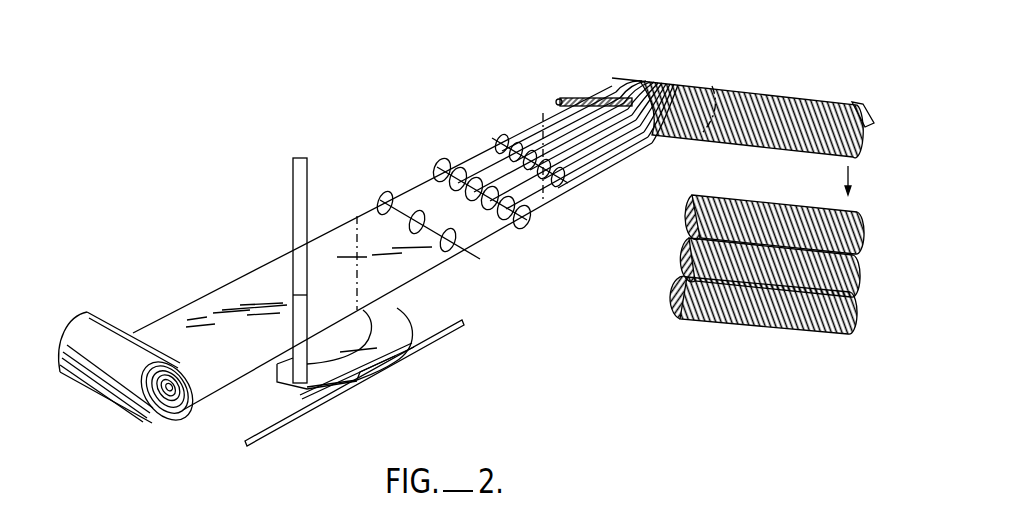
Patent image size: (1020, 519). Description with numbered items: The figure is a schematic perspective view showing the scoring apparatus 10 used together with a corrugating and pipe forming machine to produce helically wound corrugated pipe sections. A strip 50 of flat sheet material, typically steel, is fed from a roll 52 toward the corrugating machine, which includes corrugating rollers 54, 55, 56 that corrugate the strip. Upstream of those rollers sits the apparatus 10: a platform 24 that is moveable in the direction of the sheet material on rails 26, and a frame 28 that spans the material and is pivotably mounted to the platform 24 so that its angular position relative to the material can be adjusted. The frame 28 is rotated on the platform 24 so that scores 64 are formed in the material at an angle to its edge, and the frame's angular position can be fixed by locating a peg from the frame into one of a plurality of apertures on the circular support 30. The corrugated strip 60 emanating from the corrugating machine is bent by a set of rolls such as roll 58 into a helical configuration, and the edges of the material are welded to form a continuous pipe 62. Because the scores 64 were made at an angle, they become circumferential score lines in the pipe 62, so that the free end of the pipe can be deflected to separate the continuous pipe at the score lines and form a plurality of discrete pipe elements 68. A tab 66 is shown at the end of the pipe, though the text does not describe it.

The apparatus 10 is at (280, 155).
The platform 24 is at (337, 387).
The rails 26 is at (277, 430).
The frame 28 is at (292, 193).
The circular support 30 is at (400, 313).
The strip 50 is at (213, 380).
The roll 52 is at (83, 337).
The corrugating roller 54 is at (380, 197).
The corrugating roller 55 is at (434, 163).
The corrugating roller 56 is at (493, 133).
The bending roll 58 is at (568, 98).
The corrugated strip 60 is at (590, 138).
The continuous pipe 62 is at (656, 82).
The scores 64 is at (355, 214).
The tab 66 is at (860, 100).
The discrete pipe elements 68 is at (682, 295).